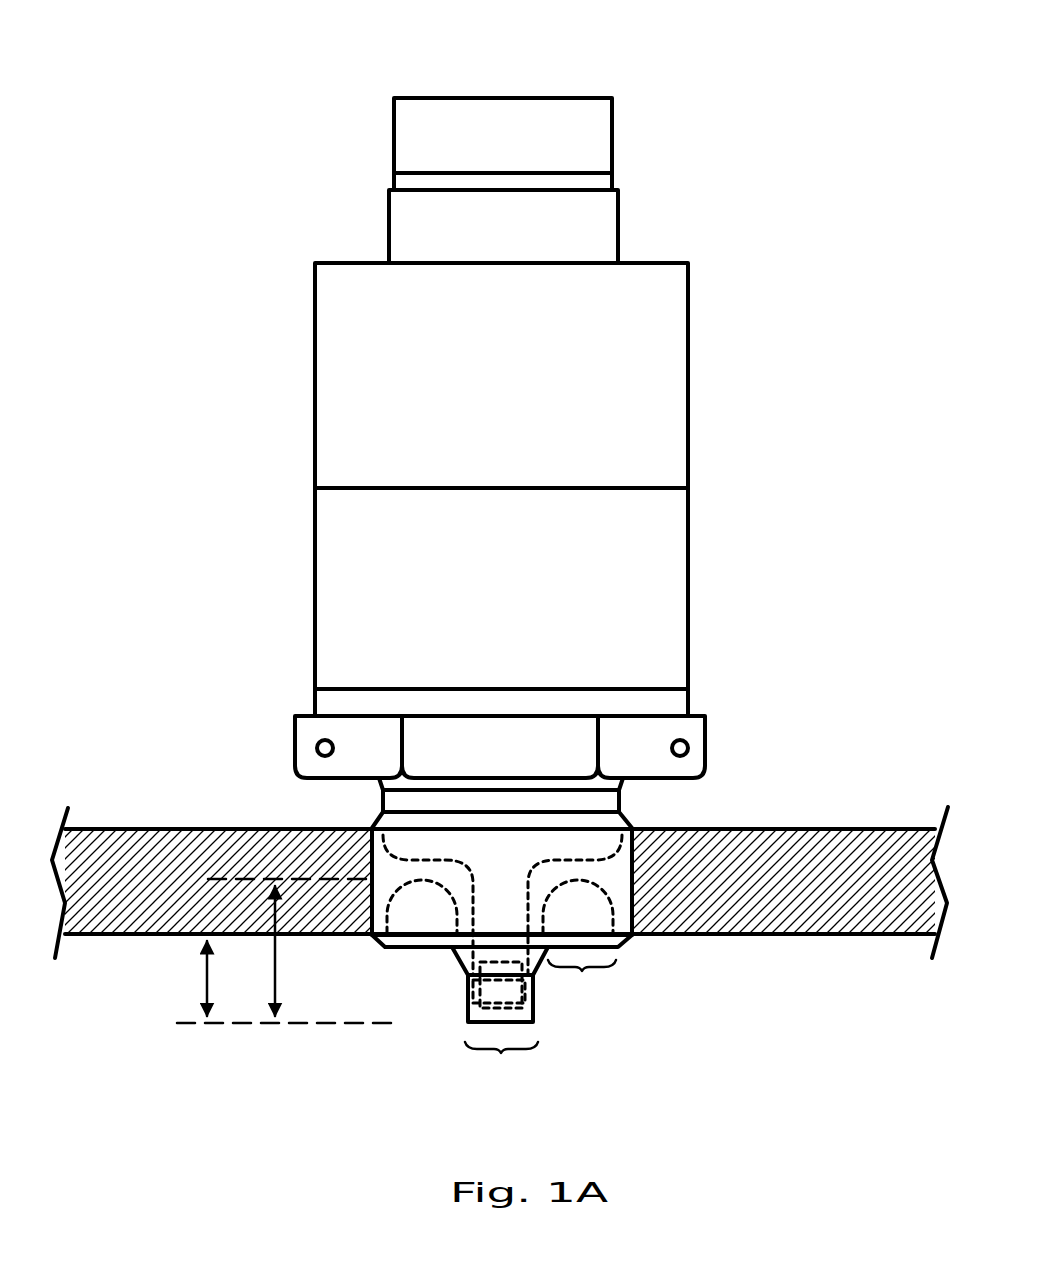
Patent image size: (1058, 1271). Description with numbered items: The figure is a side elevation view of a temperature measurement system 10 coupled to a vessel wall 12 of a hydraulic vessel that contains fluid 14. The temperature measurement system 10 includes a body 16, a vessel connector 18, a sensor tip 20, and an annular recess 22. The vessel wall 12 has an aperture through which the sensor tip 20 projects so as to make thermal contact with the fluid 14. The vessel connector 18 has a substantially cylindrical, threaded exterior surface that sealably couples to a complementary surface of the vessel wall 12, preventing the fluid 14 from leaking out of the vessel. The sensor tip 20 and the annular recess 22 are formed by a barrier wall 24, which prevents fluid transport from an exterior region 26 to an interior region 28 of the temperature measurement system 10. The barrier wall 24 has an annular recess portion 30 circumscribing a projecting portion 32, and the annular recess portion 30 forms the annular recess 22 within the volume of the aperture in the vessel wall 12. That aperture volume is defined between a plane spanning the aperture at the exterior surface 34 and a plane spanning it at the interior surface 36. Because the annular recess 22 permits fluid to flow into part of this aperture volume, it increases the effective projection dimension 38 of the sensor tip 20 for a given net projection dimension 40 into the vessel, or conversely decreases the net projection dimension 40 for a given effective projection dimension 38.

The temperature measurement system 10 is at (788, 110).
The vessel wall 12 is at (885, 855).
The fluid 14 is at (820, 1001).
The body 16 is at (315, 343).
The vessel connector 18 is at (372, 860).
The sensor tip 20 is at (470, 1023).
The annular recess 22 is at (424, 908).
The barrier wall 24 is at (438, 876).
The exterior region 26 is at (640, 980).
The interior region 28 is at (558, 845).
The annular recess portion 30 is at (582, 980).
The projecting portion 32 is at (501, 1062).
The exterior surface 34 is at (135, 829).
The interior surface 36 is at (100, 934).
The effective projection dimension 38 is at (275, 962).
The net projection dimension 40 is at (207, 986).